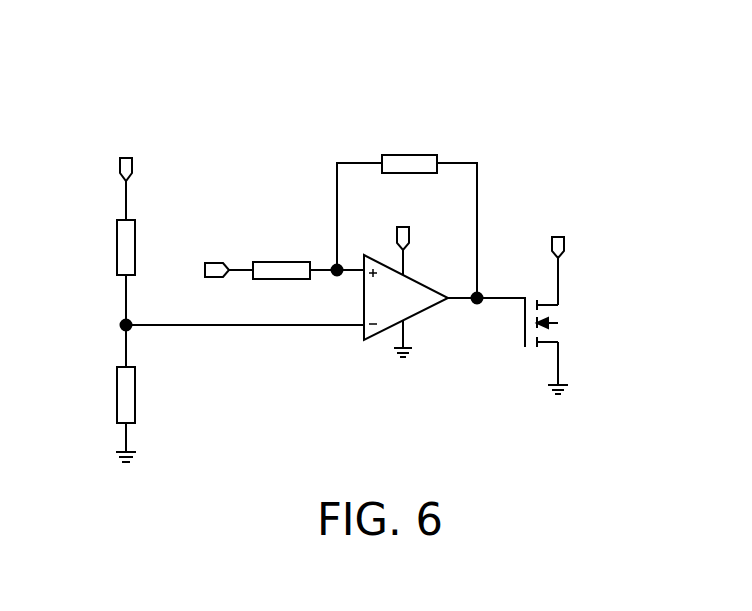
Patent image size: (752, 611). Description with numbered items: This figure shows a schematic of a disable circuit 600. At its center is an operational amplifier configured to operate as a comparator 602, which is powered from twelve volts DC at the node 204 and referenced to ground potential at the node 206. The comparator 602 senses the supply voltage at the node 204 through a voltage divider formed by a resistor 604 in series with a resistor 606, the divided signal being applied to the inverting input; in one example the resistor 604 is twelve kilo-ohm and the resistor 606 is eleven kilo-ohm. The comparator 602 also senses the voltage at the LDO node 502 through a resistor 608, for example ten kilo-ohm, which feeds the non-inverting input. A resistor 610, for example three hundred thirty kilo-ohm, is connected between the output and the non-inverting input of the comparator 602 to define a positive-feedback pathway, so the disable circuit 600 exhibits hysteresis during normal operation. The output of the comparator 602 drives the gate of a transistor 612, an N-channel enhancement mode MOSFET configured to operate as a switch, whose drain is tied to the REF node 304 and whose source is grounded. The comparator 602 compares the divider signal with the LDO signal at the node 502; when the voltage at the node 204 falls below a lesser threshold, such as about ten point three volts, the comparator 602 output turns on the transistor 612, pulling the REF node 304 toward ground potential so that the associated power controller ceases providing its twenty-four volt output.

The disable circuit 600 is at (538, 91).
The node 204 is at (132, 162).
The resistor 604 is at (117, 238).
The resistor 606 is at (117, 385).
The node 206 is at (127, 465).
The LDO node 502 is at (219, 278).
The resistor 608 is at (292, 262).
The resistor 610 is at (410, 155).
The comparator 602 is at (415, 308).
The REF node 304 is at (565, 240).
The transistor 612 is at (560, 335).